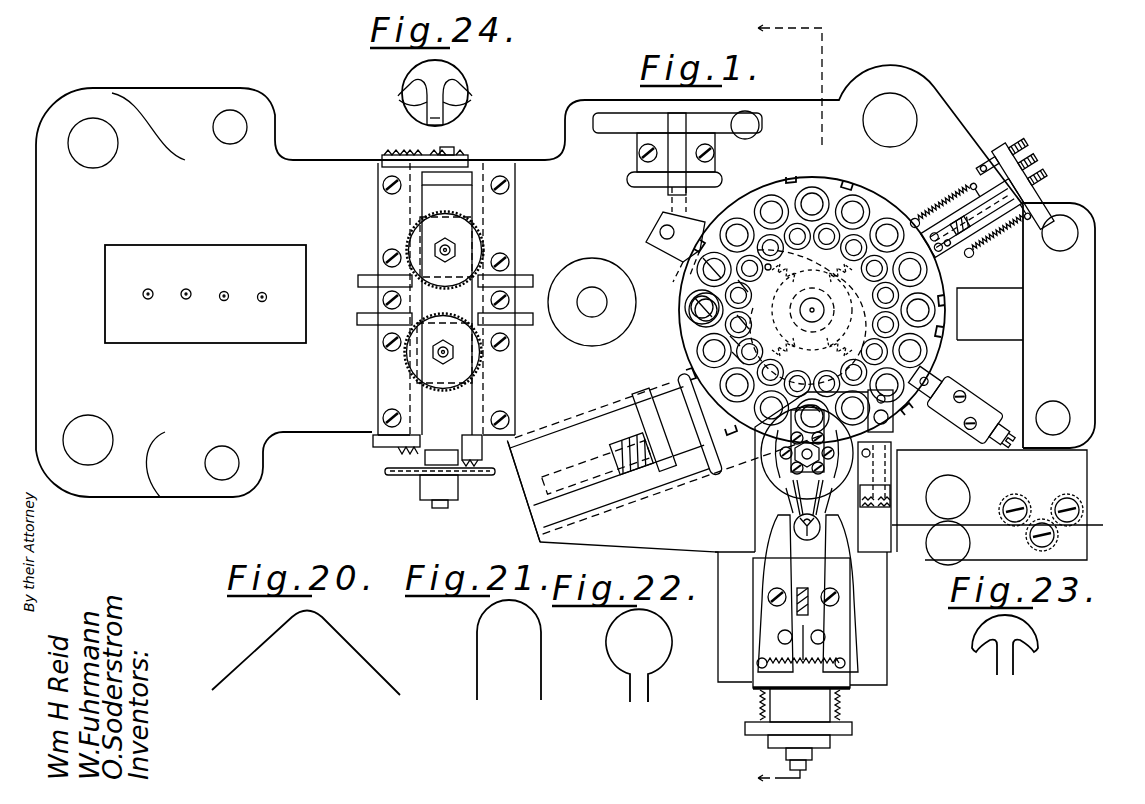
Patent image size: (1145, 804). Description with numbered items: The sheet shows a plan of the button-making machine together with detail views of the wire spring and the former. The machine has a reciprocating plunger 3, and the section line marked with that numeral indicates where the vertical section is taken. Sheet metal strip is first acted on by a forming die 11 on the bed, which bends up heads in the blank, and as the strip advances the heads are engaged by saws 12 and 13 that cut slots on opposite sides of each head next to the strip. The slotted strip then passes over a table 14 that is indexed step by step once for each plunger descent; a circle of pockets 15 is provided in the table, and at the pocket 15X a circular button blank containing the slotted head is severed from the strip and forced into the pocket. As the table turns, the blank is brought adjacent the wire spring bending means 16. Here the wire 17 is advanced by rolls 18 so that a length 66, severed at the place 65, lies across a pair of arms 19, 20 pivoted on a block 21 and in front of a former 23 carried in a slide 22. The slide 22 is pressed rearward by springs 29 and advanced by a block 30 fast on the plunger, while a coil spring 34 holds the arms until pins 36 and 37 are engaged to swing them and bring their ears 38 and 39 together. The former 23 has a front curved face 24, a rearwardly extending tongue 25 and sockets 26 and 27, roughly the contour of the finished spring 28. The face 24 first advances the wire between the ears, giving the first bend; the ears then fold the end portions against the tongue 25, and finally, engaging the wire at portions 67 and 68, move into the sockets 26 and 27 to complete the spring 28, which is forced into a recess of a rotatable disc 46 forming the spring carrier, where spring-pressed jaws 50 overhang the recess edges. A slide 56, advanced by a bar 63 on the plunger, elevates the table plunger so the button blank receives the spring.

In FIG. 1, the plunger 3 is at (780, 403).
In FIG. 1, the forming die 11 is at (242, 338).
In FIG. 1, the saw 12 is at (445, 291).
In FIG. 1, the saw 13 is at (434, 411).
In FIG. 1, the table 14 is at (782, 200).
In FIG. 1, the pocket 15 is at (890, 238).
In FIG. 1, the pocket at severing station 15X is at (702, 307).
In FIG. 1, the wire spring bending means 16 is at (513, 488).
In FIG. 1, the wire 17 is at (992, 520).
In FIG. 1, the rolls 18 is at (952, 482).
In FIG. 1, the arm 19 is at (839, 593).
In FIG. 1, the arm 20 is at (775, 593).
In FIG. 1, the block 21 is at (850, 690).
In FIG. 1, the slide 22 is at (798, 729).
In FIG. 1, the former 23 is at (807, 500).
In FIG. 24, the former 23 is at (466, 113).
In FIG. 24, the front curved face 24 is at (462, 72).
In FIG. 24, the tongue 25 is at (428, 112).
In FIG. 24, the socket 26 is at (470, 100).
In FIG. 24, the socket 27 is at (400, 99).
In FIG. 23, the finished spring 28 is at (1015, 672).
In FIG. 1, the springs 29 is at (758, 698).
In FIG. 1, the block 30 is at (808, 608).
In FIG. 1, the coil spring 34 is at (776, 658).
In FIG. 1, the pin 36 is at (822, 642).
In FIG. 1, the pin 37 is at (777, 628).
In FIG. 1, the ear 38 is at (785, 502).
In FIG. 1, the ear 39 is at (824, 515).
In FIG. 1, the rotatable disc 46 is at (764, 460).
In FIG. 1, the spring-pressed arms or jaws 50 is at (794, 480).
In FIG. 1, the slide 56 is at (703, 458).
In FIG. 1, the bar 63 is at (645, 475).
In FIG. 1, the severing place 65 is at (874, 497).
In FIG. 1, the wire length 66 is at (762, 500).
In FIG. 20, the wire length 66 is at (256, 648).
In FIG. 21, the wire length 66 is at (478, 658).
In FIG. 22, the wire portion 67 is at (625, 675).
In FIG. 22, the wire portion 68 is at (652, 676).